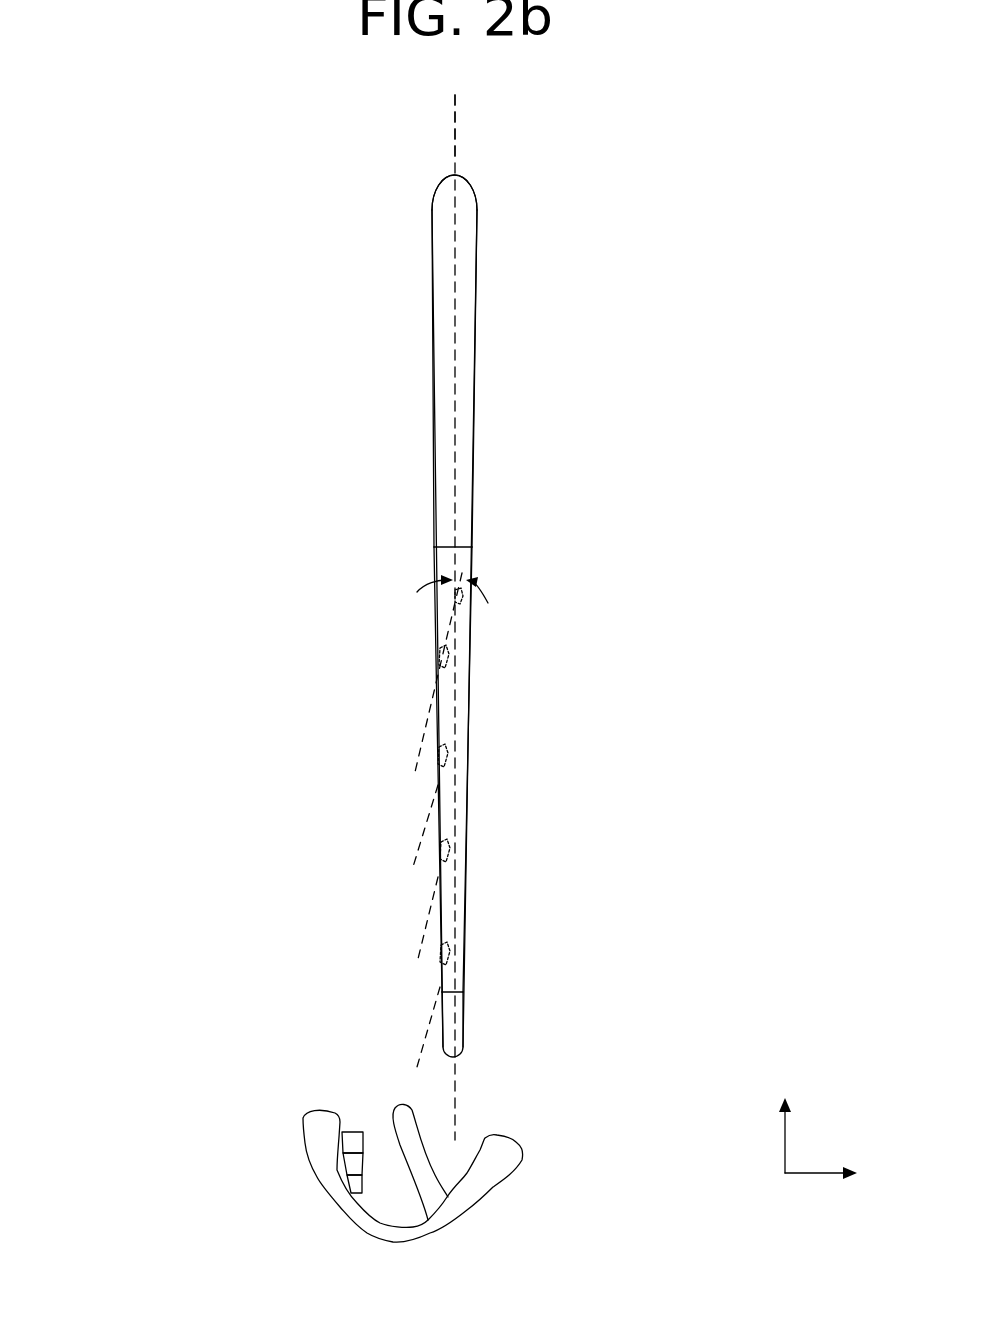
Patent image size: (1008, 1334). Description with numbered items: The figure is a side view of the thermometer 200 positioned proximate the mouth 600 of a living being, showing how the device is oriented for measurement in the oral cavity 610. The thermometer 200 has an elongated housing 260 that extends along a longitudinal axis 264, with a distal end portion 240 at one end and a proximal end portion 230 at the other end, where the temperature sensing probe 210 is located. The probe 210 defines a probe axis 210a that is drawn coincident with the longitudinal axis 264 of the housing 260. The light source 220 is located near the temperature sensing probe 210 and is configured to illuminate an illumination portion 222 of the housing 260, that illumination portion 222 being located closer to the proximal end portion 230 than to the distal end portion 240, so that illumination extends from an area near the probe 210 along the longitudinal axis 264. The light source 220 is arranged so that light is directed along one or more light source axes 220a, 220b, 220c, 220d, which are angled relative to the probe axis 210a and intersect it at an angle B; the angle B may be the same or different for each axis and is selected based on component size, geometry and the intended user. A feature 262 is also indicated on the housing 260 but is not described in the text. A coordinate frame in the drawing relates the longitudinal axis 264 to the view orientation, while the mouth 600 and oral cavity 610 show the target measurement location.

The thermometer 200 is at (130, 163).
The temperature sensing probe 210 is at (457, 1030).
The probe axis 210a is at (457, 148).
The light source 220 is at (442, 850).
The light source axis 220a is at (425, 732).
The light source axis 220b is at (425, 827).
The light source axis 220c is at (423, 940).
The light source axis 220d is at (430, 1027).
The illumination portion 222 is at (445, 707).
The proximal end portion 230 is at (474, 968).
The distal end portion 240 is at (420, 229).
The housing 260 is at (474, 508).
The shaft wall 262 is at (430, 408).
The longitudinal axis 264 is at (457, 108).
The angle B is at (457, 603).
The mouth 600 is at (507, 1167).
The oral cavity 610 is at (372, 1126).